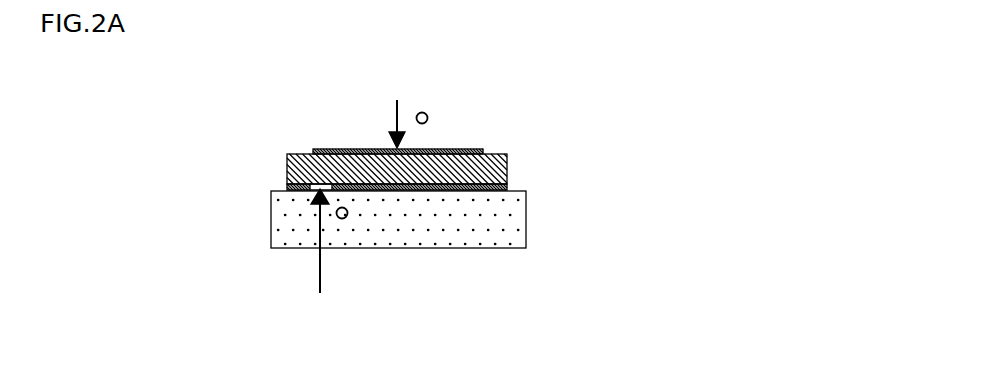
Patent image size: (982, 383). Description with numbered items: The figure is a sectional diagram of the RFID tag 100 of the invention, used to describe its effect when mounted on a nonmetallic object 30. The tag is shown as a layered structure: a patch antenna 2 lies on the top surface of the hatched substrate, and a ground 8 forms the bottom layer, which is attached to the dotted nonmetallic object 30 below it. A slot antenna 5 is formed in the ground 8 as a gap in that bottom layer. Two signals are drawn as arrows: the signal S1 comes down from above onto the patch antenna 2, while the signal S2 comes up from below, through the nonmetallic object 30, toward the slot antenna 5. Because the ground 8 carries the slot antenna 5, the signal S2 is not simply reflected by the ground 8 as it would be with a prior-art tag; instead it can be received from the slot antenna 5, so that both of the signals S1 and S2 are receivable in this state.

The RFID tag 100 is at (287, 153).
The patch antenna 2 is at (483, 148).
The ground 8 is at (507, 186).
The slot antenna 5 is at (306, 172).
The nonmetallic object 30 is at (526, 224).
The signal S1 is at (394, 116).
The signal S2 is at (318, 279).